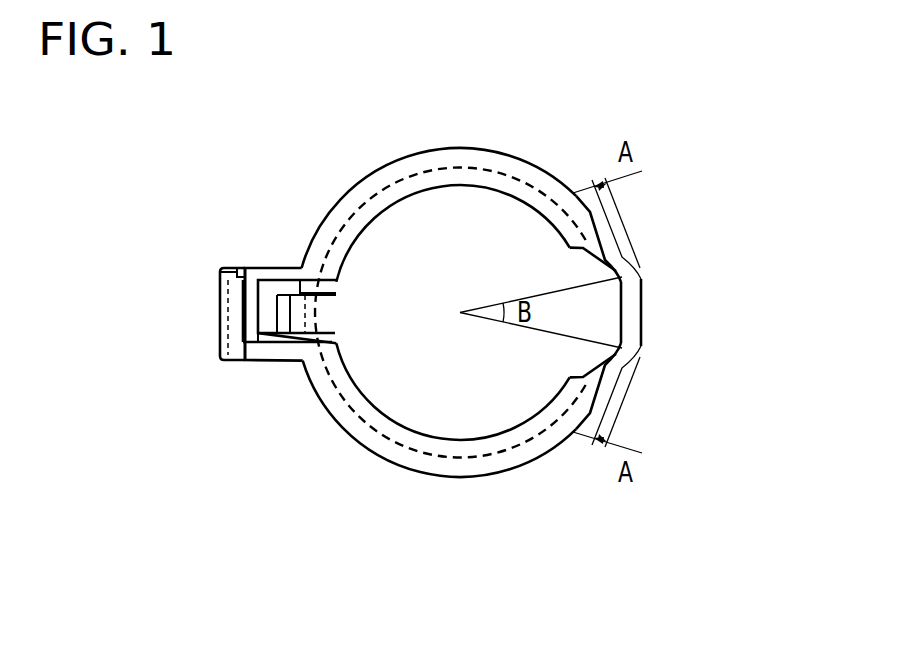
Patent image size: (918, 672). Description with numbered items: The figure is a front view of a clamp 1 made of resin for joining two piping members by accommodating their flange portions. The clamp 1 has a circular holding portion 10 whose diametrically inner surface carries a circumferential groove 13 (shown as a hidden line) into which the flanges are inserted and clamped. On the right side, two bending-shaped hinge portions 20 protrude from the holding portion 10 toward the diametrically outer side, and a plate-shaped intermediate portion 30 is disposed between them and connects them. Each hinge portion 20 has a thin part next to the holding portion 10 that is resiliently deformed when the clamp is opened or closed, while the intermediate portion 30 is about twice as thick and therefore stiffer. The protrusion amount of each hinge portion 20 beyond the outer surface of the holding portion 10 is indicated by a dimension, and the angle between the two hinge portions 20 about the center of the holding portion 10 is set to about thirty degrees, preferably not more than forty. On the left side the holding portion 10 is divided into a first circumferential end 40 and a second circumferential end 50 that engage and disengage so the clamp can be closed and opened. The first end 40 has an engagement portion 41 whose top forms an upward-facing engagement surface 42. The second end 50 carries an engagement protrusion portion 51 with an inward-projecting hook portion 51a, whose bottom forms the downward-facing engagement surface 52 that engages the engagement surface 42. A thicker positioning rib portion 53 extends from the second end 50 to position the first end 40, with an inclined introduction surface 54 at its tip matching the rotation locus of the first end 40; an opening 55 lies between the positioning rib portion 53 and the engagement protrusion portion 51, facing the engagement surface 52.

The clamp 1 is at (584, 108).
The holding portion 10 is at (463, 160).
The groove 13 is at (409, 183).
The hinge portion 20 is at (637, 266).
The intermediate portion 30 is at (632, 312).
The first circumferential end 40 is at (284, 262).
The engagement portion 41 is at (272, 268).
The engagement surface 42 is at (247, 272).
The second circumferential end 50 is at (213, 355).
The engagement protrusion portion 51 is at (232, 318).
The hook portion 51a is at (215, 278).
The engagement surface 52 is at (258, 362).
The positioning rib portion 53 is at (307, 365).
The introduction surface 54 is at (282, 360).
The opening 55 is at (223, 363).